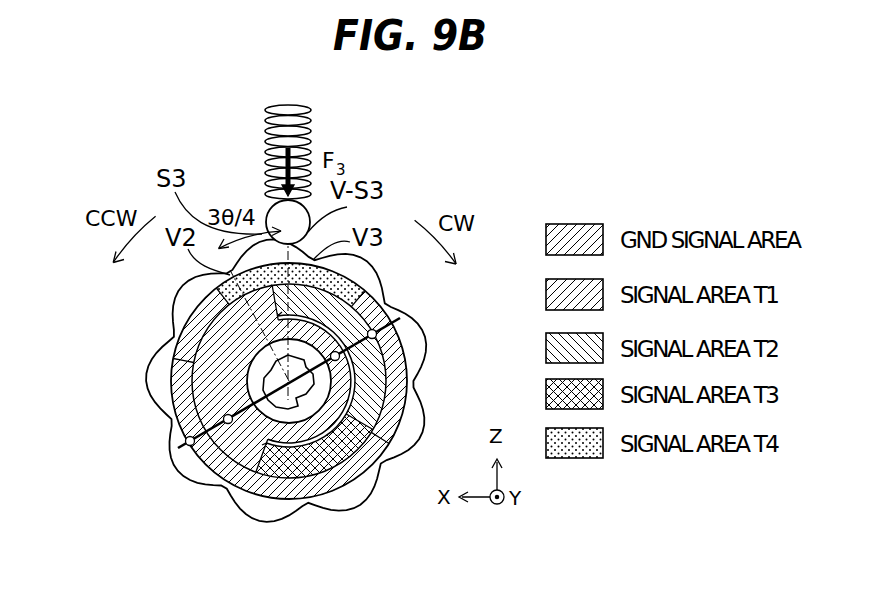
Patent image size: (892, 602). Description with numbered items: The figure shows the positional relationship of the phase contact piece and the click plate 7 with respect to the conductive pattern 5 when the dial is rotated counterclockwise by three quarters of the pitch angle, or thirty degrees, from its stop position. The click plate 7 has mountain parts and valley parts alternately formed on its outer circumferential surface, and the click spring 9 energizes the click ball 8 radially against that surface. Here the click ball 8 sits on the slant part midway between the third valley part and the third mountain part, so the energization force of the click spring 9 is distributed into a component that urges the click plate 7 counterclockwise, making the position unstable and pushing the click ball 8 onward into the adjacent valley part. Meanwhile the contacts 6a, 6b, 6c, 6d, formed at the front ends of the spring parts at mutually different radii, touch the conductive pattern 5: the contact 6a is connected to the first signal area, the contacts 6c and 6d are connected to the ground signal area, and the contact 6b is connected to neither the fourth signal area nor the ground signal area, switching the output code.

The conductive pattern 5 is at (207, 328).
The contact 6a is at (186, 441).
The contact 6b is at (376, 335).
The contact 6c is at (225, 422).
The contact 6d is at (339, 358).
The click plate 7 is at (155, 373).
The click ball 8 is at (267, 205).
The click spring 9 is at (266, 172).